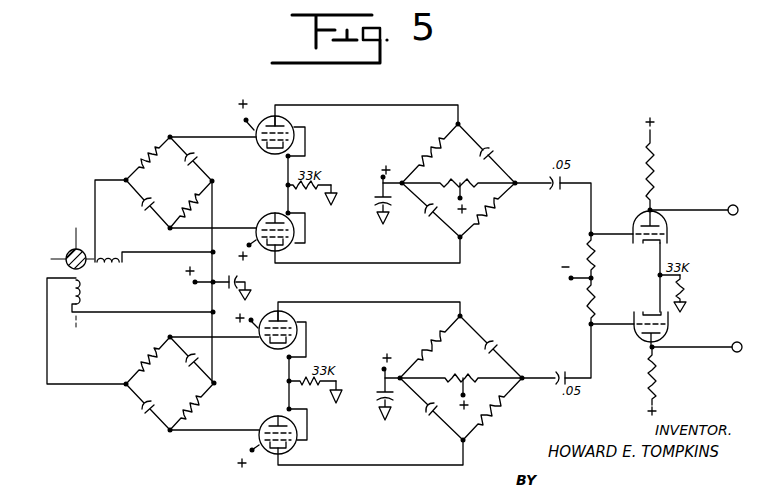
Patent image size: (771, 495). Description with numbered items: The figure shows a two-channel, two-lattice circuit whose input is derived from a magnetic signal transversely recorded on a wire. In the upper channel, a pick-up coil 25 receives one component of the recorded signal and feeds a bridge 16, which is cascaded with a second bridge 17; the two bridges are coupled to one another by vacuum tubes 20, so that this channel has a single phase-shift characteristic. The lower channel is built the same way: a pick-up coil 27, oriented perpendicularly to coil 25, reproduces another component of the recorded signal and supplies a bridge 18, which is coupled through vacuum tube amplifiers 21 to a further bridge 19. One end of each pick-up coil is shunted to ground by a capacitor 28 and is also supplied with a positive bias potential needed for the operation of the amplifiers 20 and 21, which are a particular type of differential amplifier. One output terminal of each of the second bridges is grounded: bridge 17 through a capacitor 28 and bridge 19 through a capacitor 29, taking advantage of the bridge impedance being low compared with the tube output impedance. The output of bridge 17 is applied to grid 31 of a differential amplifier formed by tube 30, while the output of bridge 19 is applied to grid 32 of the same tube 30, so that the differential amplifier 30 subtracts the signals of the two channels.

The bridge 16 is at (156, 167).
The bridge 17 is at (470, 148).
The bridge 18 is at (160, 418).
The bridge 19 is at (503, 386).
The vacuum tubes 20 is at (300, 142).
The vacuum tube amplifiers 21 is at (307, 340).
The pick-up coil 25 is at (117, 266).
The pick-up coil 27 is at (82, 299).
The capacitor 28 is at (238, 275).
The capacitor 29 is at (397, 397).
The differential amplifier tube 30 is at (667, 284).
The grid 31 is at (637, 231).
The grid 32 is at (640, 333).